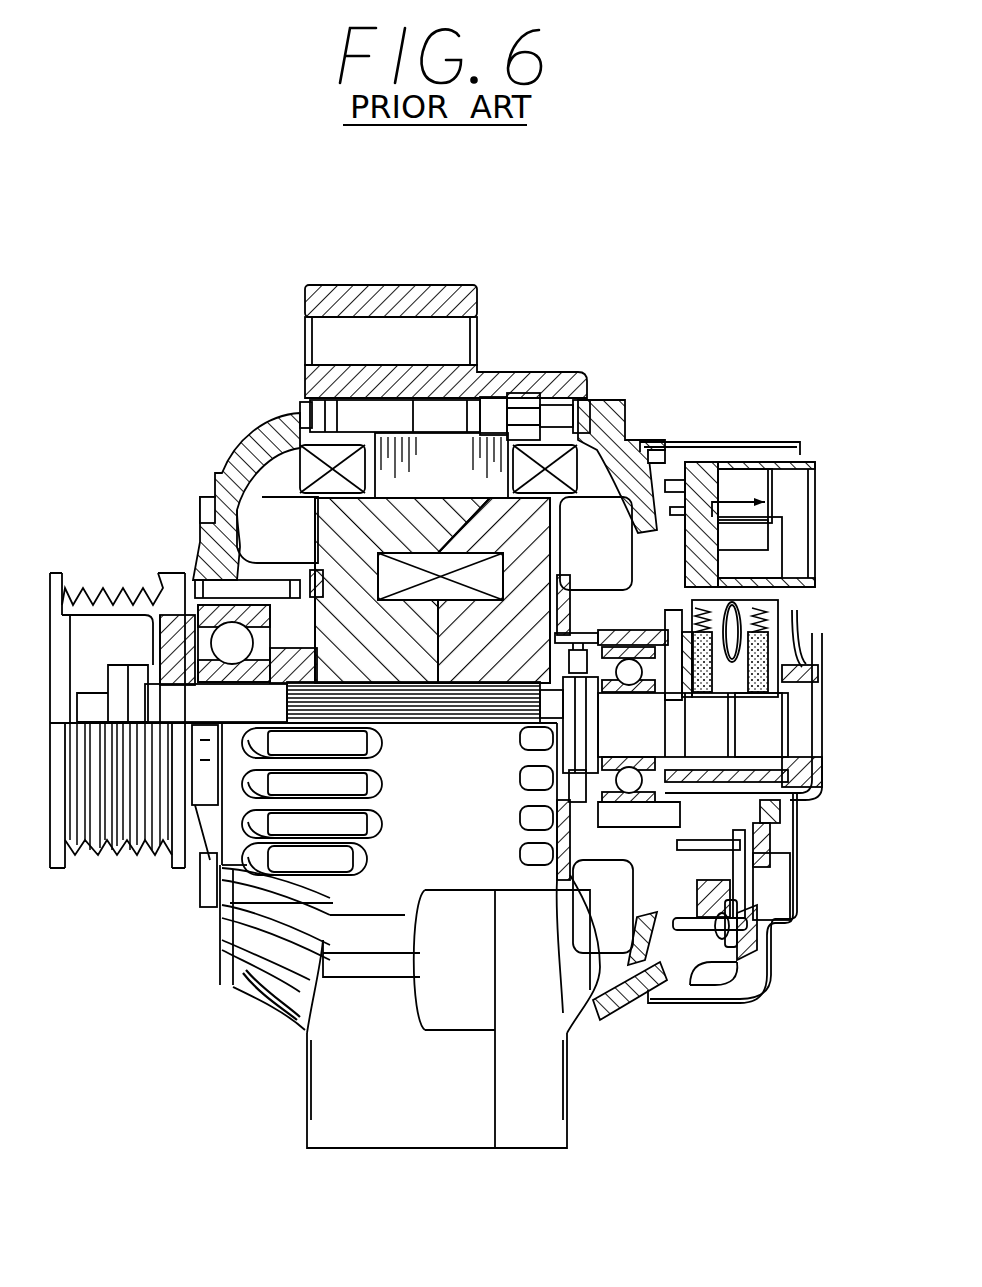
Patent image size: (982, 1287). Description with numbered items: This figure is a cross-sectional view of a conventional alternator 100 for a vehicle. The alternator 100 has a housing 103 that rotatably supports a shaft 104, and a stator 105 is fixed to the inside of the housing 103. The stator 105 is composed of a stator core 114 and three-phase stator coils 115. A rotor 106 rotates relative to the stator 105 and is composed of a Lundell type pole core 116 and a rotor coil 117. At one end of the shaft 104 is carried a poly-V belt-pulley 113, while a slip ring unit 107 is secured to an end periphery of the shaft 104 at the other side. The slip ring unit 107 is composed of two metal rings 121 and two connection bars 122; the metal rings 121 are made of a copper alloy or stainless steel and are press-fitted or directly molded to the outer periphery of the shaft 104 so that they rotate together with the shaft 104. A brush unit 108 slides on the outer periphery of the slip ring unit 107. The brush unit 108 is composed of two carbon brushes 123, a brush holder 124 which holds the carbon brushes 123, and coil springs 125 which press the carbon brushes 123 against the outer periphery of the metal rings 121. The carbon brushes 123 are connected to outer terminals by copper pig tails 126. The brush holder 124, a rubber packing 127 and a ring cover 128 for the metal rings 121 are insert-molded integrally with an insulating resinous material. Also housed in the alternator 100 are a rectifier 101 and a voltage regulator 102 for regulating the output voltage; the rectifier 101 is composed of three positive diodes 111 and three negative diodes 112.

The alternator 100 is at (173, 396).
The rectifier 101 is at (711, 992).
The voltage regulator 102 is at (739, 458).
The housing 103 is at (298, 1029).
The shaft 104 is at (165, 724).
The stator 105 is at (289, 473).
The rotor 106 is at (584, 485).
The slip ring unit 107 is at (792, 707).
The brush unit 108 is at (785, 612).
The positive diodes 111 is at (740, 930).
The negative diodes 112 is at (773, 847).
The poly-V belt-pulley 113 is at (145, 855).
The stator core 114 is at (487, 437).
The three-phase stator coils 115 is at (305, 460).
The Lundell type pole core 116 is at (403, 663).
The rotor coil 117 is at (482, 575).
The metal rings 121 is at (712, 717).
The connection bars 122 is at (573, 680).
The carbon brushes 123 is at (740, 662).
The brush holder 124 is at (775, 603).
The coil springs 125 is at (700, 600).
The copper pig tails 126 is at (805, 645).
The rubber packing 127 is at (813, 770).
The ring cover 128 is at (803, 790).